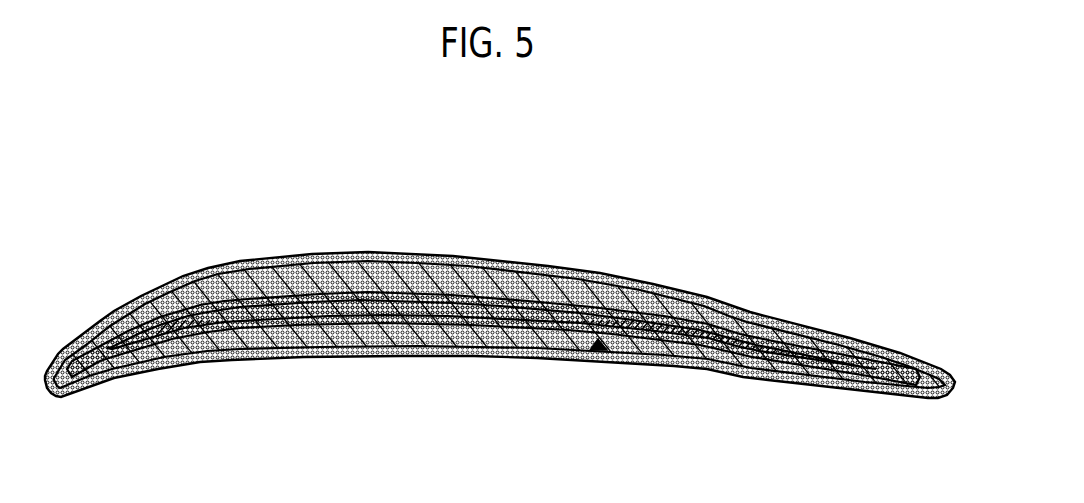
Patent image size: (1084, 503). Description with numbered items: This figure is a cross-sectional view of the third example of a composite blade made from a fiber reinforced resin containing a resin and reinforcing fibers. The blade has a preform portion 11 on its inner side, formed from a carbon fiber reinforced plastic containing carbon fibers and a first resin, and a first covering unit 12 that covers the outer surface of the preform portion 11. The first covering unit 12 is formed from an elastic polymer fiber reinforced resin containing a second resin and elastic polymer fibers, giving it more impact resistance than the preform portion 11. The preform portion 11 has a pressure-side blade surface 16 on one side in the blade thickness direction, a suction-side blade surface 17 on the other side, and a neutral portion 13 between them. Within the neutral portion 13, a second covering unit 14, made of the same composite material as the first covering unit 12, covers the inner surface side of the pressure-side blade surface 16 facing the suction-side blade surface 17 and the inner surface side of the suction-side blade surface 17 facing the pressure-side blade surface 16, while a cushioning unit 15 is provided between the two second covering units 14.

The preform portion 11 is at (362, 267).
The first covering unit 12 is at (303, 258).
The neutral portion 13 is at (598, 352).
The second covering unit 14 is at (420, 292).
The cushioning unit 15 is at (480, 310).
The pressure-side blade surface 16 is at (662, 350).
The suction-side blade surface 17 is at (658, 308).